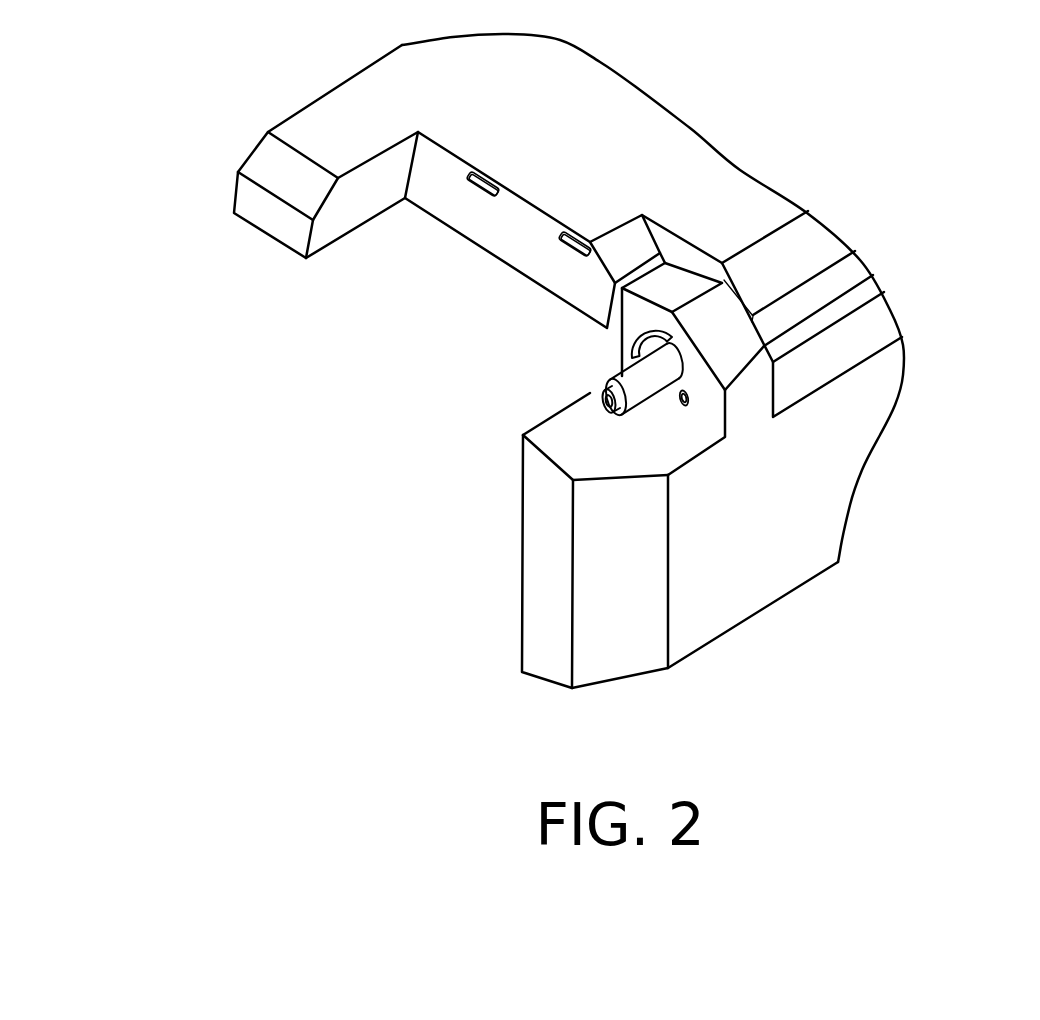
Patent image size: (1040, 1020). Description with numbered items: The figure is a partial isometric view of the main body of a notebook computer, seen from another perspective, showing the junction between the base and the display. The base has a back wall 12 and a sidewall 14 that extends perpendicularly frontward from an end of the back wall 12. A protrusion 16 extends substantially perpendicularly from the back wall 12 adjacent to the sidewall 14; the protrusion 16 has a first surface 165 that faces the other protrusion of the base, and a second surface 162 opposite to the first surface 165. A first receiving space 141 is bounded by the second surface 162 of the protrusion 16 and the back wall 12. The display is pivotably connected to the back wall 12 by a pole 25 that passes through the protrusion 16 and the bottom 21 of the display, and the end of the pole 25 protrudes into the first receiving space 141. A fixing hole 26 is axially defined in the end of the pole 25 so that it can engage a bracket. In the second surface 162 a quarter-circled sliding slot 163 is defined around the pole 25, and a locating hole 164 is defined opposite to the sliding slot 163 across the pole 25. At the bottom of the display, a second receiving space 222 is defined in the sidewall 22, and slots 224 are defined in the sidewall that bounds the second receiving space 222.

The back wall 12 is at (572, 458).
The sidewall 14 is at (555, 595).
The first receiving space 141 is at (668, 448).
The protrusion 16 is at (743, 403).
The second surface 162 is at (688, 362).
The sliding slot 163 is at (632, 347).
The locating hole 164 is at (675, 386).
The first surface 165 is at (751, 284).
The bottom of the display 21 is at (843, 272).
The sidewall of the display 22 is at (273, 214).
The second receiving space 222 is at (387, 250).
The slot 224 is at (487, 182).
The pole 25 is at (635, 377).
The fixing hole 26 is at (597, 398).